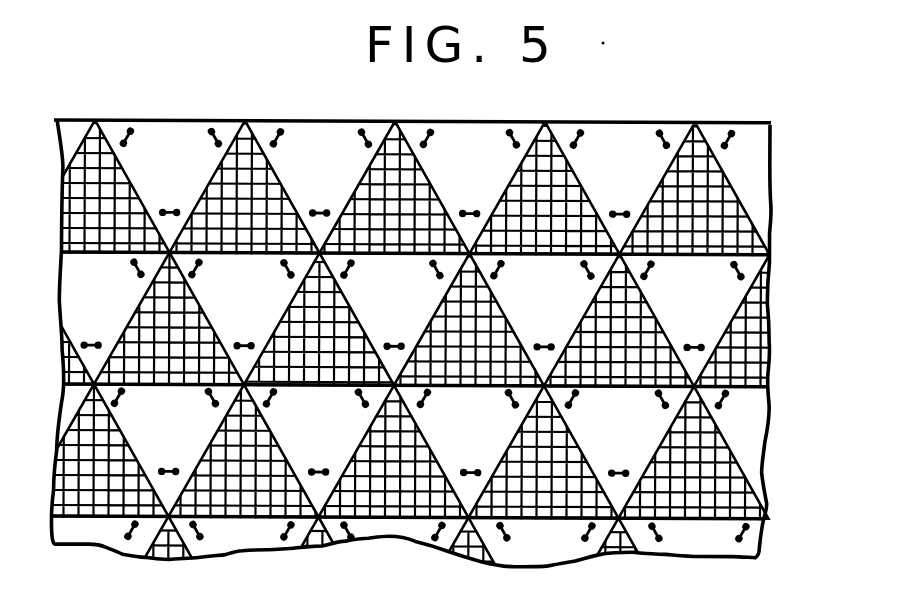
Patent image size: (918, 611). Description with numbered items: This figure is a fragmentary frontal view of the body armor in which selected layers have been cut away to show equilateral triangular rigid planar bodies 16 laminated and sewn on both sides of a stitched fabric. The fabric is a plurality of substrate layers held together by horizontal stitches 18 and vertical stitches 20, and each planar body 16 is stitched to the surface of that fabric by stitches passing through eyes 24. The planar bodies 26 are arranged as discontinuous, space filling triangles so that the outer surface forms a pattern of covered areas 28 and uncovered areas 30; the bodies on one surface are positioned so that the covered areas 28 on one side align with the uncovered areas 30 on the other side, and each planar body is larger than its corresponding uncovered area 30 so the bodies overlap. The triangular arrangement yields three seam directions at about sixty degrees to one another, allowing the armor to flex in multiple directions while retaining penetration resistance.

The planar body 16 is at (753, 132).
The horizontal stitches 18 is at (747, 489).
The vertical stitches 20 is at (234, 497).
The eyes 24 is at (278, 132).
The planar bodies 26 is at (127, 131).
The covered area 28 is at (470, 121).
The uncovered area 30 is at (754, 349).